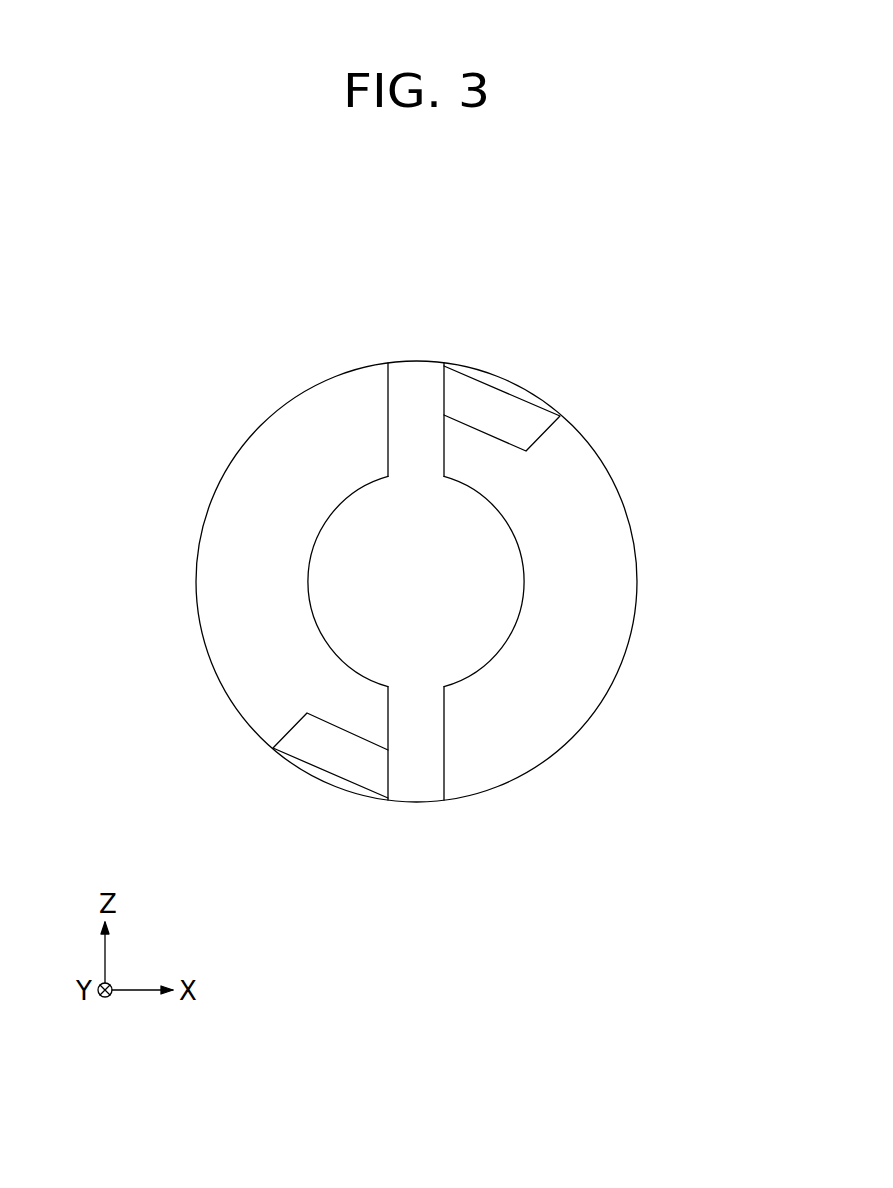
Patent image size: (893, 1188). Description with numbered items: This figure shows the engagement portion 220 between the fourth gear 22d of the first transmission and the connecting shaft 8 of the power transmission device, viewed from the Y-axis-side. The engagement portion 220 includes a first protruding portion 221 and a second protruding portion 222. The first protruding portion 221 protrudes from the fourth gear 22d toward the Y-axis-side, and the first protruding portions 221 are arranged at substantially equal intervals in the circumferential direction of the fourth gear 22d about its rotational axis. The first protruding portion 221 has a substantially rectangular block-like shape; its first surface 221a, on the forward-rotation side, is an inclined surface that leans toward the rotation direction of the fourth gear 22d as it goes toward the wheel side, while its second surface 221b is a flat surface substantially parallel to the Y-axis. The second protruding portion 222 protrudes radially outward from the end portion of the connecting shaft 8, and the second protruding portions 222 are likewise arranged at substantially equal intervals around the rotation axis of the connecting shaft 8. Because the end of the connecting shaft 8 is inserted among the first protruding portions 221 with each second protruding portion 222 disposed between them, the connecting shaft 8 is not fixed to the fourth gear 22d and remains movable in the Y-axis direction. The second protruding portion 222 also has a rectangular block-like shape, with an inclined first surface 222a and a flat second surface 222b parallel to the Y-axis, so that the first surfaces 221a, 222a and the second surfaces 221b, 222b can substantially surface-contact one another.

The engagement portion 220 is at (695, 248).
The first protruding portion 221 is at (577, 376).
The first surface 221a is at (444, 396).
The second surface 221b is at (545, 436).
The second protruding portion 222 is at (410, 607).
The first surface 222a is at (445, 400).
The second surface 222b is at (388, 412).
The fourth gear 22d is at (210, 577).
The connecting shaft 8 is at (505, 602).